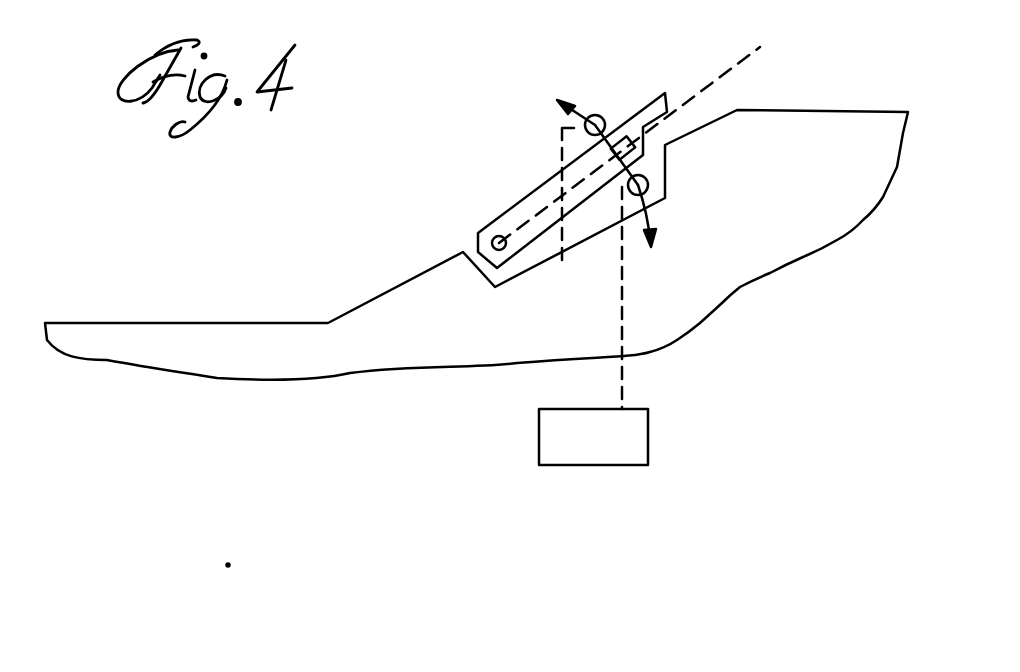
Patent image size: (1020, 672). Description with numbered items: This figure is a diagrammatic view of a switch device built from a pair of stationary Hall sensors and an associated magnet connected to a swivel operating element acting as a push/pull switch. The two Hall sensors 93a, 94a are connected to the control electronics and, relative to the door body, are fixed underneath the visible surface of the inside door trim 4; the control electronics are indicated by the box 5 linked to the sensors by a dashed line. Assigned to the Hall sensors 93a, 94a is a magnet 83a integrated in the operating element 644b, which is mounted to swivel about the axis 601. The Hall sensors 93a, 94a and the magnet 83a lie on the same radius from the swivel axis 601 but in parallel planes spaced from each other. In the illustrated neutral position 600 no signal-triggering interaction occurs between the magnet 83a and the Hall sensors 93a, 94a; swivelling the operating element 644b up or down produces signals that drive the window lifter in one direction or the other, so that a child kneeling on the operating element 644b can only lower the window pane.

The inside door trim 4 is at (375, 358).
The control unit 5 is at (603, 452).
The neutral position 600 is at (765, 43).
The swivel axis 601 is at (497, 236).
The operating element 644b is at (550, 197).
The magnet 83a is at (617, 138).
The Hall sensor 93a is at (609, 118).
The Hall sensor 94a is at (650, 180).